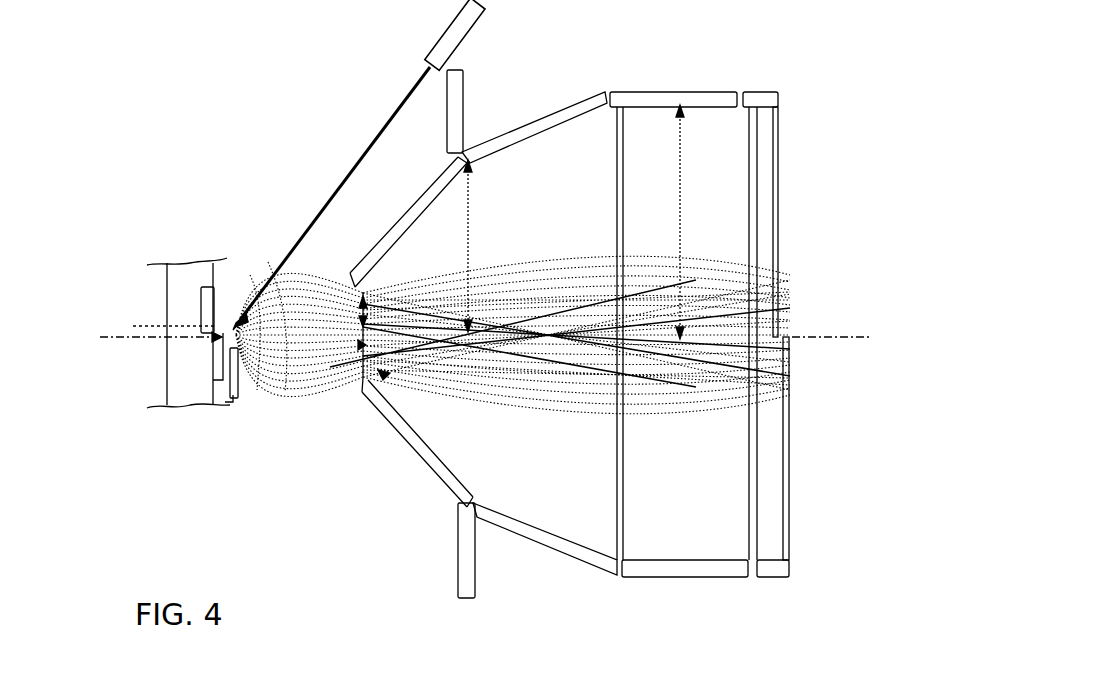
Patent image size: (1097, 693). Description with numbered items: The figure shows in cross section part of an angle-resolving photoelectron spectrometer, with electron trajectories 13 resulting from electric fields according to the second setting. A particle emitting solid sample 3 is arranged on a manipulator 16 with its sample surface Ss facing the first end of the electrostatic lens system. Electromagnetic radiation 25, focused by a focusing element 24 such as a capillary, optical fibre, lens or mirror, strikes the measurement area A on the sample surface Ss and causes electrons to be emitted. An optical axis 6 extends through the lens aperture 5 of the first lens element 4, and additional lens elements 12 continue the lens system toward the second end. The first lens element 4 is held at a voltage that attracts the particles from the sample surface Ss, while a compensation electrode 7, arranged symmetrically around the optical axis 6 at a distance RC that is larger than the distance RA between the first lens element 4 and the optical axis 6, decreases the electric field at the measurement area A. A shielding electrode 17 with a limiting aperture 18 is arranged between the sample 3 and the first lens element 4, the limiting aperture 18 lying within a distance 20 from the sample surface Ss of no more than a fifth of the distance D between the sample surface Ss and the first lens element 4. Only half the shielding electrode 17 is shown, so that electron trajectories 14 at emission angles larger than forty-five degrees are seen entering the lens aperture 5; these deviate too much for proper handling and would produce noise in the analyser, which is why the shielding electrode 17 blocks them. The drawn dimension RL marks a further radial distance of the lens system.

The particle emitting solid sample 3 is at (147, 323).
The first lens element 4 is at (585, 107).
The lens aperture 5 is at (383, 373).
The optical axis 6 is at (822, 332).
The compensation electrode 7 is at (477, 122).
The additional lens elements 12 is at (782, 95).
The electron trajectories 13 is at (277, 388).
The electron trajectories 14 is at (593, 257).
The manipulator 16 is at (180, 383).
The shielding electrode 17 is at (233, 400).
The limiting aperture 18 is at (227, 360).
The distance 20 is at (237, 408).
The focusing element 24 is at (455, 28).
The electromagnetic radiation 25 is at (303, 230).
The measurement area A is at (146, 341).
The distance D is at (258, 390).
The sample surface Ss is at (232, 320).
The distance between the first lens element and the optical axis RA is at (370, 300).
The distance from the compensation electrode to the optical axis RC is at (468, 270).
The lens radius RL is at (682, 193).